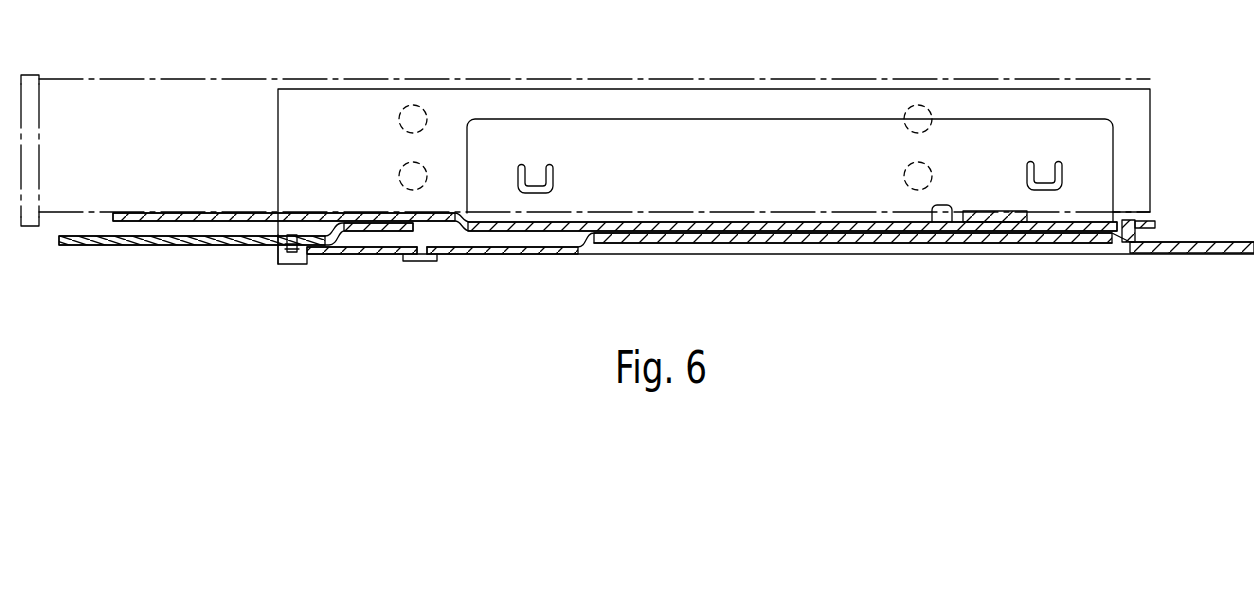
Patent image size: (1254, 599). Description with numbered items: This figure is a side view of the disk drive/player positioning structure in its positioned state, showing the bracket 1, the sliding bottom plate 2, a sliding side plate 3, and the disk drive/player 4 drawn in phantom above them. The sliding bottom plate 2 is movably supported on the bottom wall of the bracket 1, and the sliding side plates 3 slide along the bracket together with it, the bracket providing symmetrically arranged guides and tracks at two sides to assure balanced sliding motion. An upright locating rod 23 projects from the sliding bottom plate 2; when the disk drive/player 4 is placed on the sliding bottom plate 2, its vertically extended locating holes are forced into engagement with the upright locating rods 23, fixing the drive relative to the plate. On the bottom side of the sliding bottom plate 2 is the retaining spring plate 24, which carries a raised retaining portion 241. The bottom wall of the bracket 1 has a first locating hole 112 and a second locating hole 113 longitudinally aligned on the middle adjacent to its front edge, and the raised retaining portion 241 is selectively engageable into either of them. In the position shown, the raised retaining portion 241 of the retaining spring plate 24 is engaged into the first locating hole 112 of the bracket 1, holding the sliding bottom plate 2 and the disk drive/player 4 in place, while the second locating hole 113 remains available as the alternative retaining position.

The bracket 1 is at (493, 255).
The first locating hole 112 is at (289, 258).
The second locating hole 113 is at (417, 250).
The sliding bottom plate 2 is at (157, 222).
The upright locating rod 23 is at (943, 218).
The retaining spring plate 24 is at (230, 246).
The raised retaining portion 241 is at (297, 254).
The sliding side plate 3 is at (793, 142).
The disk drive/player 4 is at (185, 101).